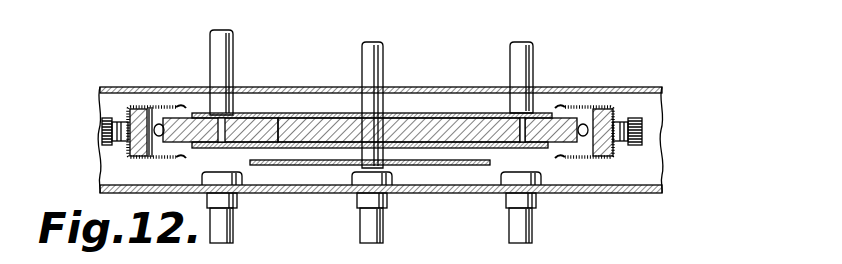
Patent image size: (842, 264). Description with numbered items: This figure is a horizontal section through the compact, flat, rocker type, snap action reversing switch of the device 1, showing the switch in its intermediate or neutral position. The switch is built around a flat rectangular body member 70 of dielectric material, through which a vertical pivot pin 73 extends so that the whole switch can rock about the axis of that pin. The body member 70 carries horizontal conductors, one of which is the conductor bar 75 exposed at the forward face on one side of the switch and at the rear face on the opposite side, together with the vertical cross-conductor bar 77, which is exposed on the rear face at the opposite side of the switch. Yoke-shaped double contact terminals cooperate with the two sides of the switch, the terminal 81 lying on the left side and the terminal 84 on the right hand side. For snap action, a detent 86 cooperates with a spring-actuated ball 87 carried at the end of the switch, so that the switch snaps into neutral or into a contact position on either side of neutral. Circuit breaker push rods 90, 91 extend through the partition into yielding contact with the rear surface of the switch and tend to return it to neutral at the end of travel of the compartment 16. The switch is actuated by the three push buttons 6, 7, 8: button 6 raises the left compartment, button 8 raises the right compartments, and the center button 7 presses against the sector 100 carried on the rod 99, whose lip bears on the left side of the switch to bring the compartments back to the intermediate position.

The housing 1 is at (670, 163).
The push button 6 is at (236, 229).
The push button 7 is at (384, 232).
The push button 8 is at (534, 230).
The compartment 16 is at (187, 150).
The body member 70 is at (308, 116).
The pivot pin 73 is at (397, 116).
The conductor bar 75 is at (446, 128).
The cross-conductor bar 77 is at (552, 114).
The double contact terminal 81 is at (158, 125).
The double contact terminal 84 is at (597, 114).
The detent 86 is at (616, 116).
The spring-actuated ball 87 is at (578, 124).
The circuit breaker push rod 90 is at (223, 62).
The circuit breaker push rod 91 is at (525, 64).
The rod 99 is at (383, 63).
The sector 100 is at (491, 163).